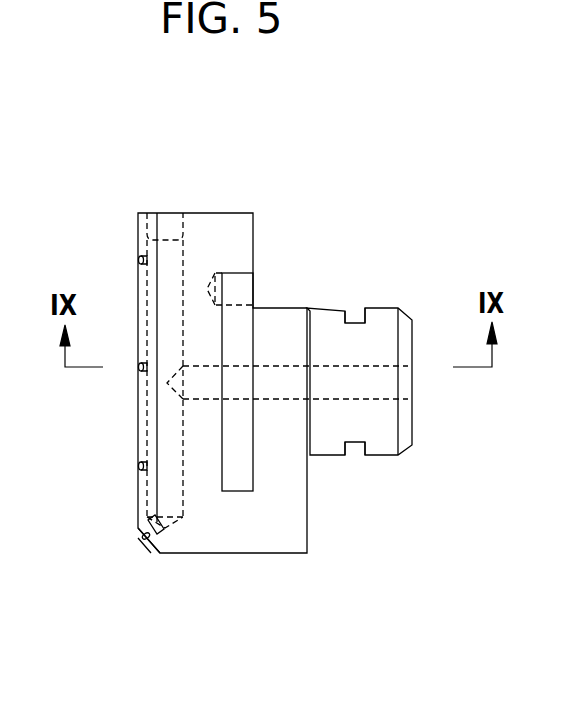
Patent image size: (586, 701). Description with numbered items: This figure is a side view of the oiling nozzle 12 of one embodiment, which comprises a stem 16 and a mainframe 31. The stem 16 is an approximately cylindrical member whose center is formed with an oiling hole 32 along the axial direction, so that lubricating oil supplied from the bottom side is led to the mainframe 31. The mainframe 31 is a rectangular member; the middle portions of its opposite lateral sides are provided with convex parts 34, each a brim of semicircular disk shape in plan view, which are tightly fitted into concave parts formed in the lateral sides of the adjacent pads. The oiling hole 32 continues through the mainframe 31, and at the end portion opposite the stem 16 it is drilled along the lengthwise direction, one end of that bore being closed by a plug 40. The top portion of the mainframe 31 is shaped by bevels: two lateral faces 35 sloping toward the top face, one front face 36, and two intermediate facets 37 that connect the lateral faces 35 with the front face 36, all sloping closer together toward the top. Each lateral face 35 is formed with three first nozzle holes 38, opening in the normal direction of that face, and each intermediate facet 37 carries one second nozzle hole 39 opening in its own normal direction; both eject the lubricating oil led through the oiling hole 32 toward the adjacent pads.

The oiling nozzle 12 is at (275, 325).
The mainframe 31 is at (235, 215).
The stem 16 is at (380, 322).
The plug 40 is at (172, 222).
The nozzle hole 38 is at (138, 260).
The lateral face 35 is at (148, 398).
The oiling hole 32 is at (186, 443).
The convex part 34 is at (238, 482).
The front face 36 is at (150, 543).
The intermediate facet 37 is at (158, 550).
The nozzle hole 39 is at (140, 537).